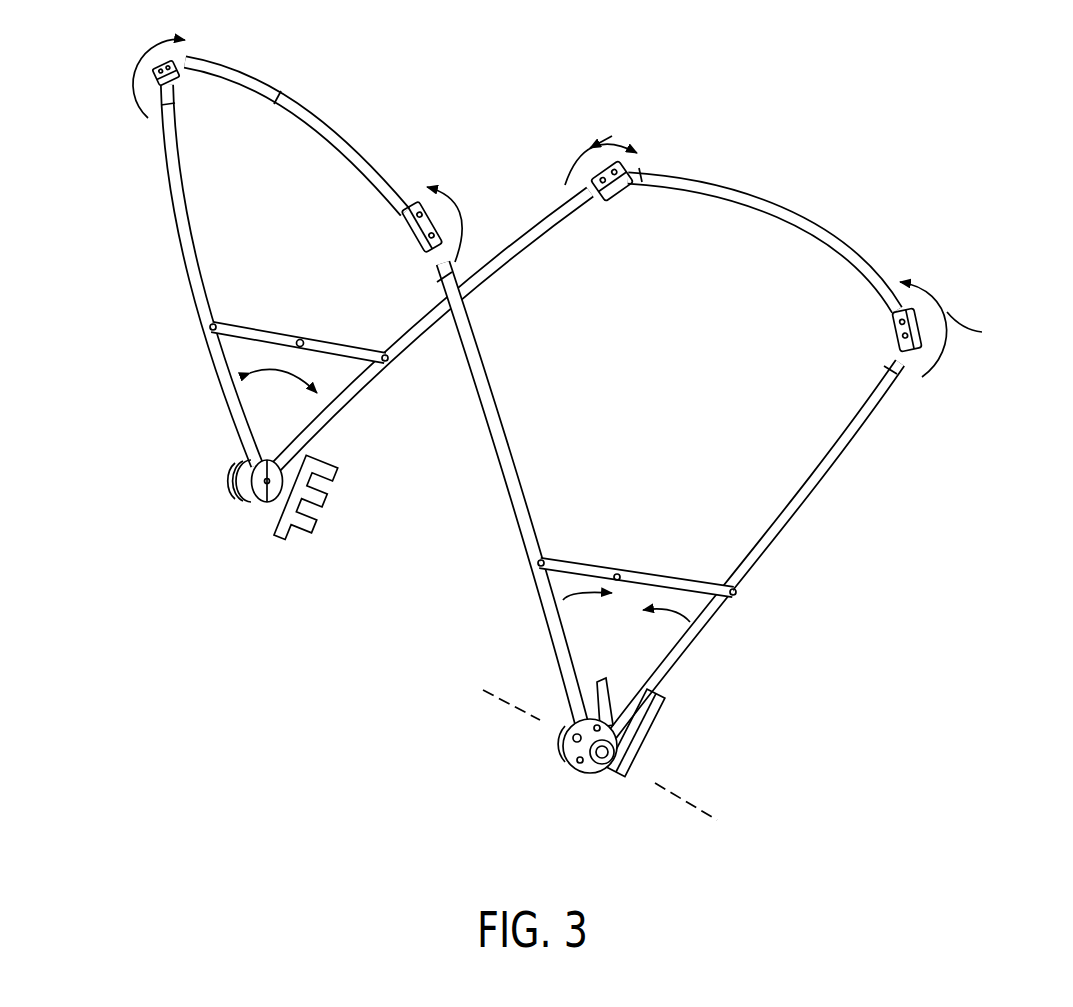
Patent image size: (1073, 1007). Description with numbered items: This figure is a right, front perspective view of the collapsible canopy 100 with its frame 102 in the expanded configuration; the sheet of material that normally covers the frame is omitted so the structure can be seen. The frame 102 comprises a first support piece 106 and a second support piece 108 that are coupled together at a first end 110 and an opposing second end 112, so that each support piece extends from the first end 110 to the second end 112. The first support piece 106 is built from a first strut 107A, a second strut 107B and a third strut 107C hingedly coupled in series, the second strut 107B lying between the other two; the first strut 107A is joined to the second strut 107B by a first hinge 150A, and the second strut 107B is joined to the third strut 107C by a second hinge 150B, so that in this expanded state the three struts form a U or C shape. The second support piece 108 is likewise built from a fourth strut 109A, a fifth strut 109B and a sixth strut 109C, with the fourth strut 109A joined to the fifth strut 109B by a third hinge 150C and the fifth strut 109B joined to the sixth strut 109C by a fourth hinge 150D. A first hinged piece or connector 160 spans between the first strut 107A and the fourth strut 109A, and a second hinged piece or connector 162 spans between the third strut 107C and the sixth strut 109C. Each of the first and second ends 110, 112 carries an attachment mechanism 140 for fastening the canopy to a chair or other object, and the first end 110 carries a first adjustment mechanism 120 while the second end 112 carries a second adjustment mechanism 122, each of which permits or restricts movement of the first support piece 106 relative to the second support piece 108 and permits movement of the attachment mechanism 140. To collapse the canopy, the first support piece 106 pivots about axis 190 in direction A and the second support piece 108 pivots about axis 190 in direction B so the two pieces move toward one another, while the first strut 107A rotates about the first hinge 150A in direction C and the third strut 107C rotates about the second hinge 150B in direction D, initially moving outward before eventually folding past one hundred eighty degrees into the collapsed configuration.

The collapsible canopy 100 is at (663, 130).
The frame 102 is at (407, 363).
The first support piece 106 is at (525, 420).
The first strut 107A is at (180, 253).
The second strut 107B is at (328, 118).
The third strut 107C is at (520, 537).
The second support piece 108 is at (533, 197).
The fourth strut 109A is at (510, 257).
The fifth strut 109B is at (760, 203).
The sixth strut 109C is at (823, 497).
The first end 110 is at (243, 520).
The second end 112 is at (548, 740).
The first adjustment mechanism 120 is at (215, 473).
The second adjustment mechanism 122 is at (583, 783).
The attachment mechanism 140 is at (343, 520).
The first hinge 150A is at (195, 92).
The second hinge 150B is at (403, 240).
The third hinge 150C is at (593, 153).
The fourth hinge 150D is at (880, 343).
The first hinged piece or connector 160 is at (240, 312).
The second hinged piece or connector 162 is at (672, 558).
The axis 190 is at (687, 807).